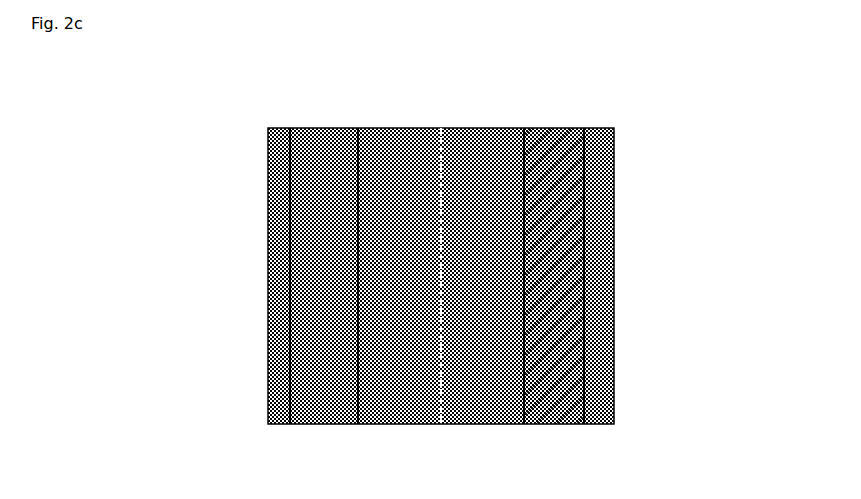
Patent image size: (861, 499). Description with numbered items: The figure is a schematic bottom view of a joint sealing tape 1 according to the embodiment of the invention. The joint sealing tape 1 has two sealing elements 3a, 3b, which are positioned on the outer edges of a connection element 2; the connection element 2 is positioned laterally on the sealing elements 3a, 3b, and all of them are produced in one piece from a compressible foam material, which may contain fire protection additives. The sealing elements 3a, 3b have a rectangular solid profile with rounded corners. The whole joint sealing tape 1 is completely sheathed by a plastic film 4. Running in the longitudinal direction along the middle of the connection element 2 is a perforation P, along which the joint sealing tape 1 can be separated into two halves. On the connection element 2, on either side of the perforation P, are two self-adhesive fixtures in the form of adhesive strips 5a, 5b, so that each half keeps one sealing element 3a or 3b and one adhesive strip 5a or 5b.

The joint sealing tape 1 is at (265, 83).
The connection element 2 is at (378, 145).
The sealing element 3a is at (277, 300).
The sealing element 3b is at (588, 275).
The plastic film 4 is at (367, 267).
The adhesive strip 5a is at (312, 172).
The adhesive strip 5b is at (553, 172).
The perforation P is at (433, 373).